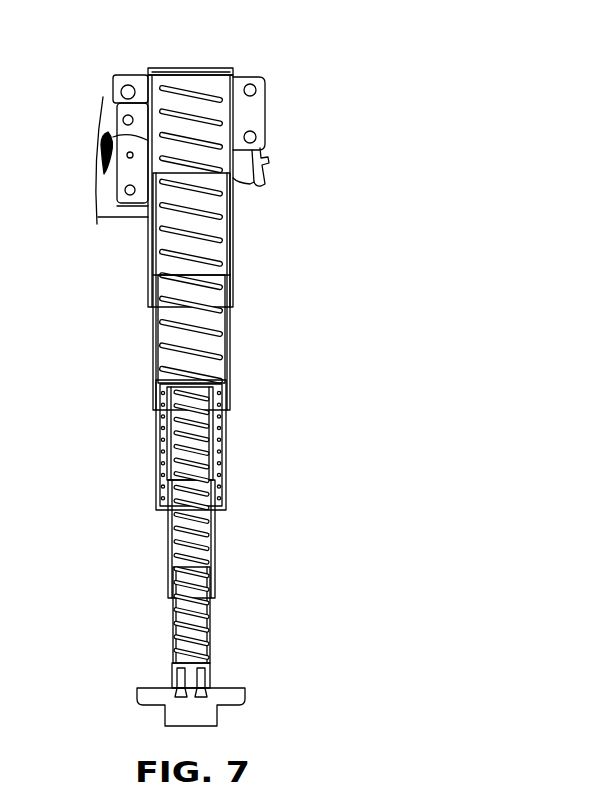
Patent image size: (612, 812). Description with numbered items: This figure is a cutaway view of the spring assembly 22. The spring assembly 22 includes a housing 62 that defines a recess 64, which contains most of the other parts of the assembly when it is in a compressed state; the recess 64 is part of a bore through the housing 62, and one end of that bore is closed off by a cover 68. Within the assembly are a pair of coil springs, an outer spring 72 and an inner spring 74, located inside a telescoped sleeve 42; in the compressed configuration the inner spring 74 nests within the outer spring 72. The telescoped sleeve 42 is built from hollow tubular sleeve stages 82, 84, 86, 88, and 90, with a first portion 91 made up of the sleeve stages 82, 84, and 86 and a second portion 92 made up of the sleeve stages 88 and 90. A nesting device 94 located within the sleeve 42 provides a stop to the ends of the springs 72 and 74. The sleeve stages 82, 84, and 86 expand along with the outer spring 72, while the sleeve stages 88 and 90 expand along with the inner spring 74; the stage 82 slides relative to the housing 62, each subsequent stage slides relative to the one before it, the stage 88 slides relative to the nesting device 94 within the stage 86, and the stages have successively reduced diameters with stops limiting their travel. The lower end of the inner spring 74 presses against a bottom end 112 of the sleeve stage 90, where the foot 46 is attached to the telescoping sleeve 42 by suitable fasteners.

The spring assembly 22 is at (298, 230).
The telescoped sleeve 42 is at (300, 363).
The foot 46 is at (236, 694).
The housing 62 is at (248, 114).
The recess 64 is at (100, 136).
The cover 68 is at (186, 68).
The outer spring 72 is at (207, 297).
The inner spring 74 is at (200, 535).
The sleeve stage 82 is at (148, 256).
The sleeve stage 84 is at (152, 345).
The sleeve stage 86 is at (157, 452).
The sleeve stage 88 is at (170, 543).
The sleeve stage 90 is at (170, 627).
The first portion 91 is at (112, 315).
The second portion 92 is at (112, 600).
The nesting device 94 is at (227, 433).
The bottom end 112 is at (210, 665).